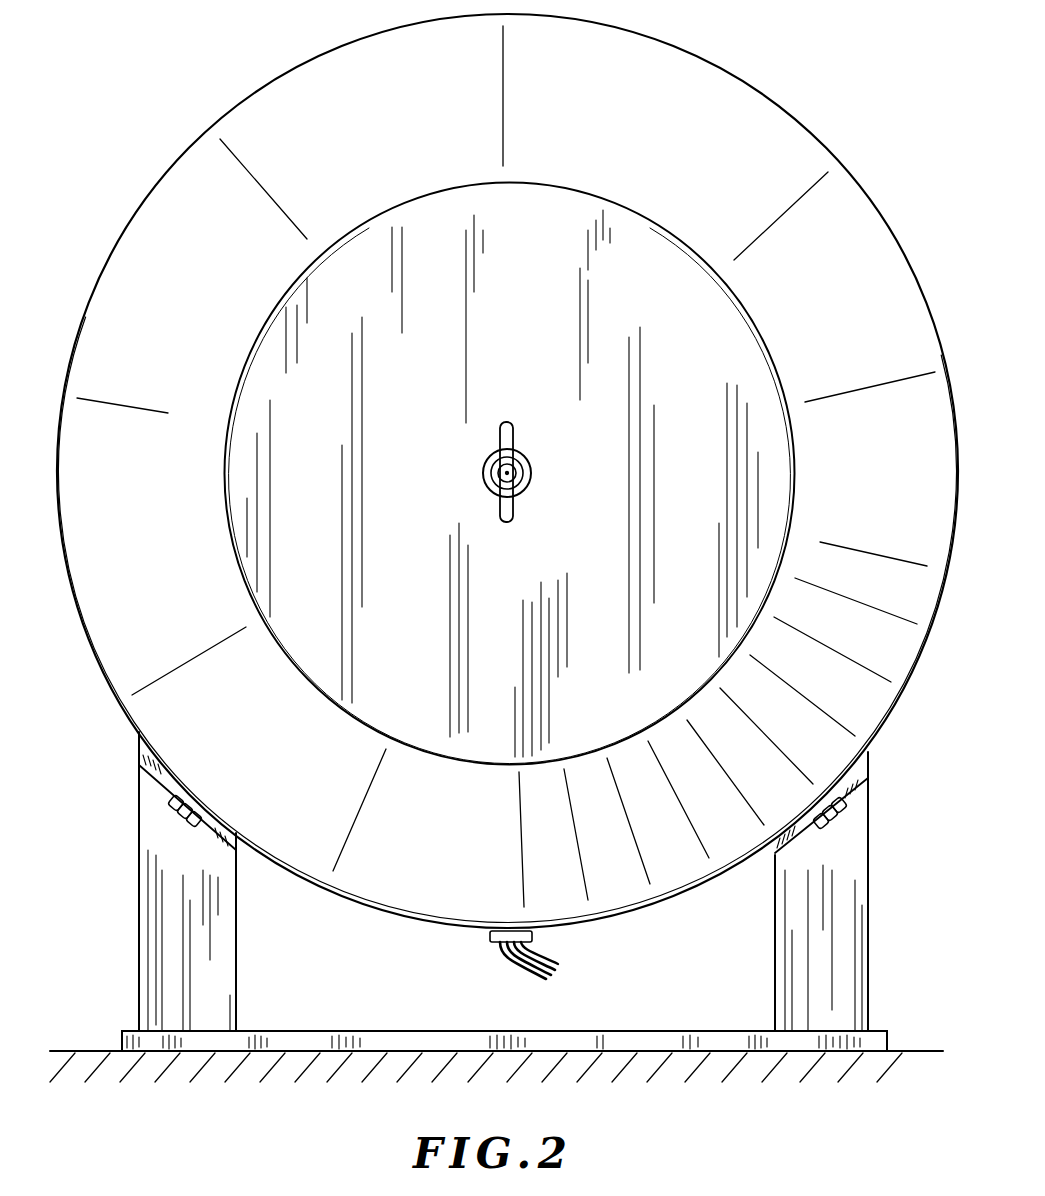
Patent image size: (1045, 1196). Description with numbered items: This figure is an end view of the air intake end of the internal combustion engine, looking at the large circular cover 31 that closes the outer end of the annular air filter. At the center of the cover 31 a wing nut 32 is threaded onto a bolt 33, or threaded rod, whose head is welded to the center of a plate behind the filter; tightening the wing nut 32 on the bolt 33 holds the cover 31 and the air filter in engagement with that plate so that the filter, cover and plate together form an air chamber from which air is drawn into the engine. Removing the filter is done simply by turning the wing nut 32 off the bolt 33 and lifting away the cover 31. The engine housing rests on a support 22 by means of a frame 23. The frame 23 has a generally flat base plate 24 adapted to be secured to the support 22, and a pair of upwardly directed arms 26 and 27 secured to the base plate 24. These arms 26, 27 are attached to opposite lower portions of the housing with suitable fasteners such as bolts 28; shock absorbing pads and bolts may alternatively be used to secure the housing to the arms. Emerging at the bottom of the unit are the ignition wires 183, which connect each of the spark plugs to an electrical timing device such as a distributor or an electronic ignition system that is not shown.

The circular cover 31 is at (787, 128).
The wing nut 32 is at (509, 435).
The bolt 33 is at (511, 476).
The frame 23 is at (517, 891).
The arm 27 is at (237, 962).
The arm 26 is at (774, 962).
The base plate 24 is at (632, 1040).
The bolts 28 is at (175, 822).
The support 22 is at (84, 1062).
The ignition wires 183 is at (512, 958).